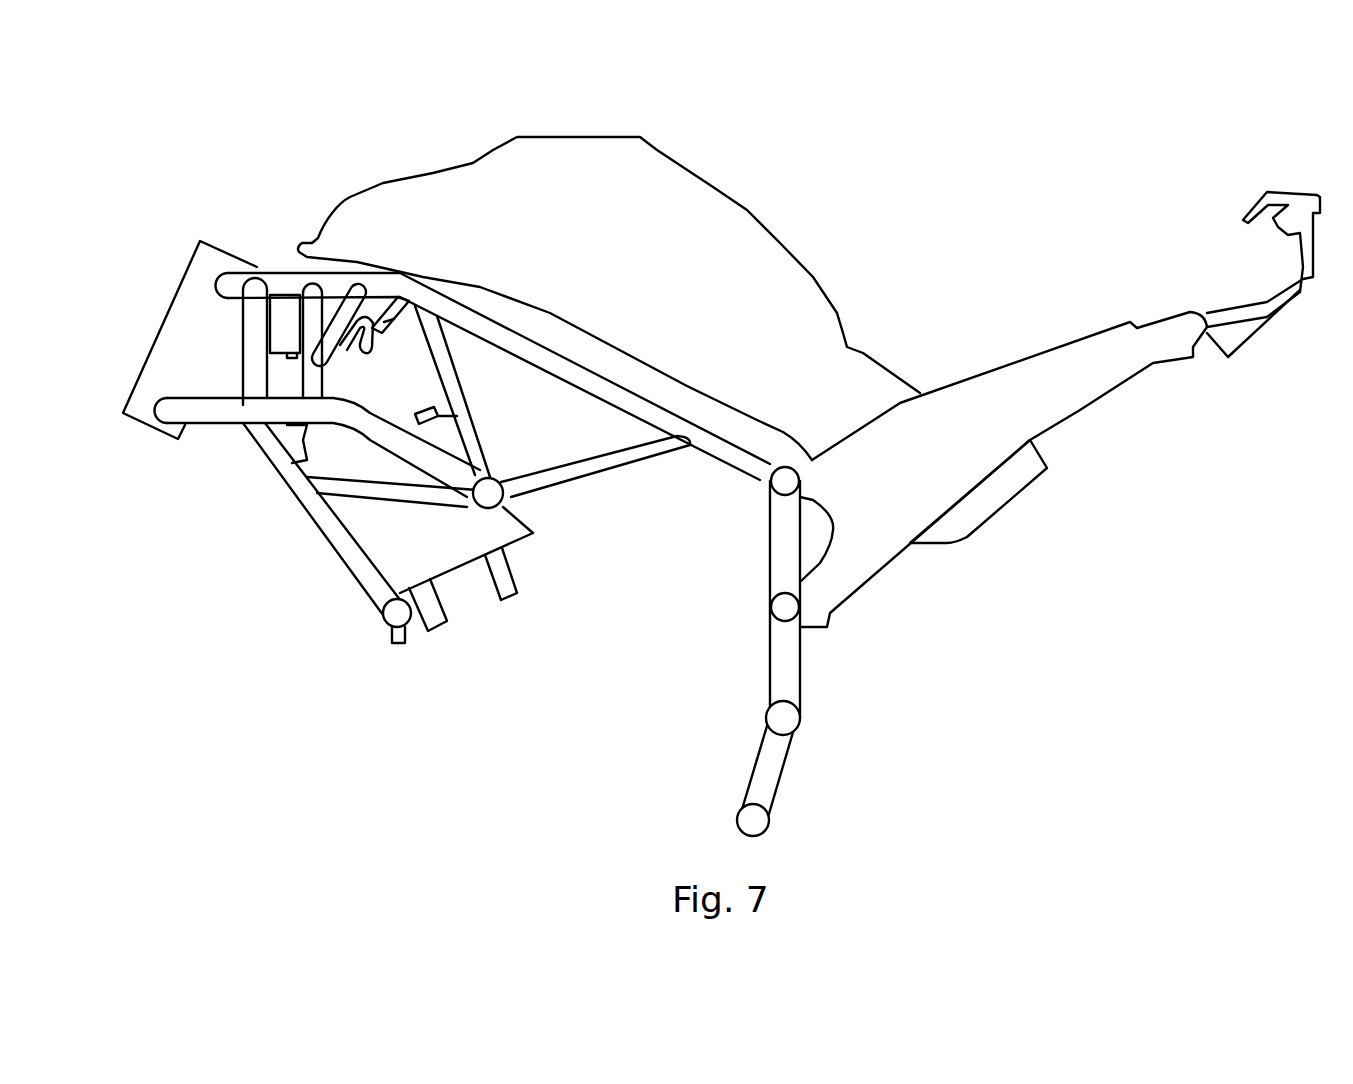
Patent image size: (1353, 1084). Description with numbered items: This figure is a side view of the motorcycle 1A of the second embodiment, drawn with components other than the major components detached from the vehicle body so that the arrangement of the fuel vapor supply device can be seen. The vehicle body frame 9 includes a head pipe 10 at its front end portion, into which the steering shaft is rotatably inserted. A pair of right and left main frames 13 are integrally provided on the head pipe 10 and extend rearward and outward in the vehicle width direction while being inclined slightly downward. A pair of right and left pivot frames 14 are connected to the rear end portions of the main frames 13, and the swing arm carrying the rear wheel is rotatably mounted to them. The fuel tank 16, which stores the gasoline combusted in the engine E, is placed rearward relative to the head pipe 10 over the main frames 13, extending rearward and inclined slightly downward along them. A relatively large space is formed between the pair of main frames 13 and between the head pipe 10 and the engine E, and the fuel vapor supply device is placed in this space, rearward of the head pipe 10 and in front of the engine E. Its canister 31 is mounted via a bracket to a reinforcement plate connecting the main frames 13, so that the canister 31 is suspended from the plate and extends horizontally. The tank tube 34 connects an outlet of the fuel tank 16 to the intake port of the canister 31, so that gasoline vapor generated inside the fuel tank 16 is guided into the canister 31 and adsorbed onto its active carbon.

The motorcycle 1A is at (1202, 162).
The vehicle body frame 9 is at (463, 397).
The head pipe 10 is at (178, 307).
The main frame 13 is at (312, 282).
The pivot frame 14 is at (780, 655).
The fuel tank 16 is at (740, 217).
The canister 31 is at (287, 383).
The tank tube 34 is at (403, 312).
The engine E is at (530, 517).